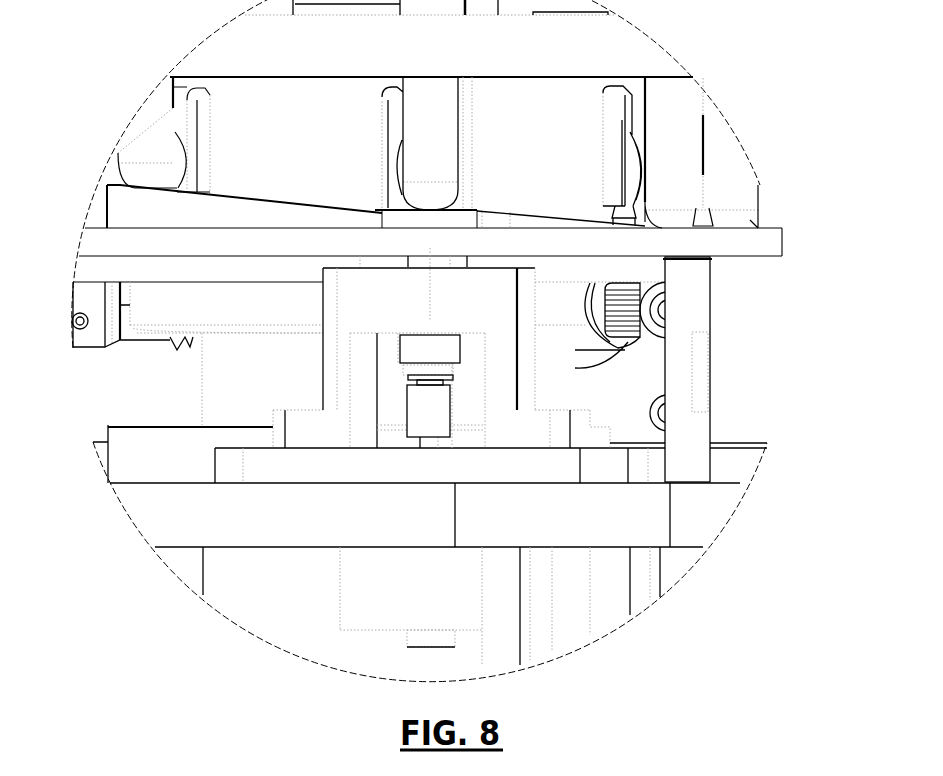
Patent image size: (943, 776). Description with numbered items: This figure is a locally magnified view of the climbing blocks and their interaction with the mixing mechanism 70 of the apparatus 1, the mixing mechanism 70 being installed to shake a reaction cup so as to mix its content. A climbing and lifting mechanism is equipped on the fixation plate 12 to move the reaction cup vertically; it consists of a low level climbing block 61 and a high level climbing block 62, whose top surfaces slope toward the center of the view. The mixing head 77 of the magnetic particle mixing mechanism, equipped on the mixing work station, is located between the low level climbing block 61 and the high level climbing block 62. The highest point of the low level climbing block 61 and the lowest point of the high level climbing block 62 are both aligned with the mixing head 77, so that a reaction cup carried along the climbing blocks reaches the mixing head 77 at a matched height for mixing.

The main body 1 is at (444, 135).
The mixing head 77 is at (457, 216).
The low level climbing block 61 is at (525, 220).
The fixation plate 12 is at (750, 242).
The high level climbing block 62 is at (125, 209).
The mixing mechanism 70 is at (438, 368).